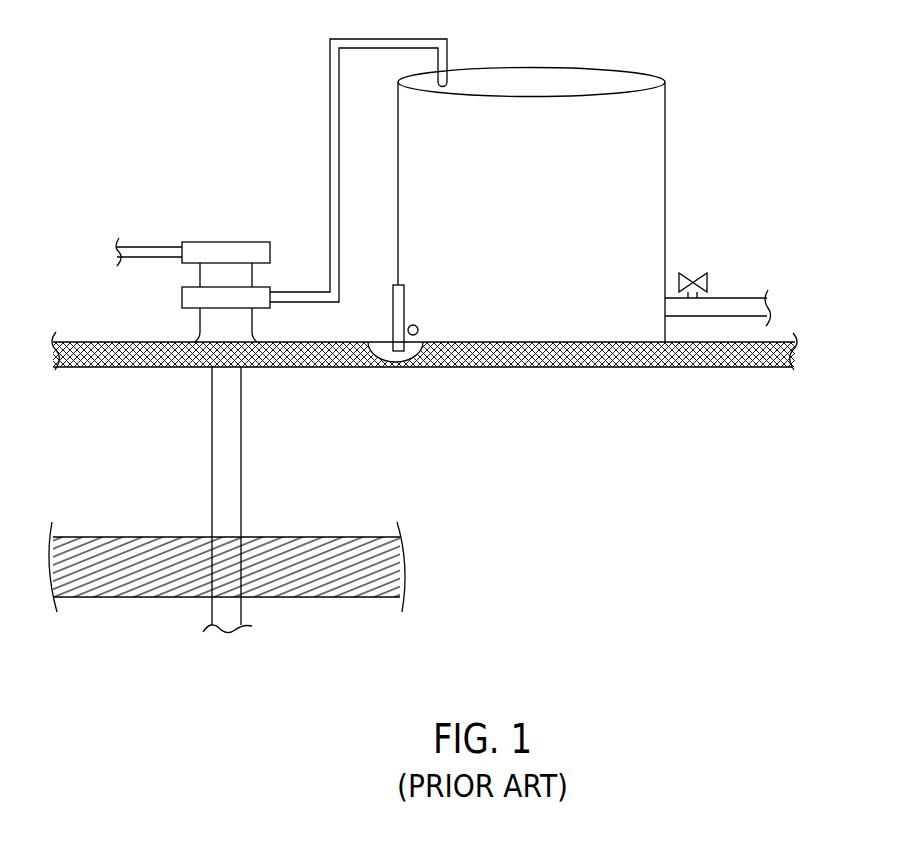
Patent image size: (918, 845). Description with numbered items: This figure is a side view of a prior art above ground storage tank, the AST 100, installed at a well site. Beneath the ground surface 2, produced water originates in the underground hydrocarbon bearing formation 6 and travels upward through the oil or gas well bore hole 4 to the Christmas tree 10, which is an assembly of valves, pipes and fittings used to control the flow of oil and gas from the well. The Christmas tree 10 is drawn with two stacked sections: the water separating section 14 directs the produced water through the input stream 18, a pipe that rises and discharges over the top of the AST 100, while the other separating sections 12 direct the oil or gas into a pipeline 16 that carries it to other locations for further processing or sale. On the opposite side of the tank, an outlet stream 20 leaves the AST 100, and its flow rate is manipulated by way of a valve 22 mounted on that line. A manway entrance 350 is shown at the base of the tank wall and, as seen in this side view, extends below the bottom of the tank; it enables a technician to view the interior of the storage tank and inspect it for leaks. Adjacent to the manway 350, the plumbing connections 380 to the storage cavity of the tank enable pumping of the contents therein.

The ground surface 2 is at (716, 368).
The oil or gas well bore hole 4 is at (226, 452).
The underground hydrocarbon bearing formation 6 is at (405, 560).
The Christmas tree 10 is at (209, 200).
The separating sections 12 is at (224, 246).
The water separating section 14 is at (181, 293).
The pipeline 16 is at (174, 242).
The input stream 18 is at (357, 39).
The outlet stream 20 is at (717, 297).
The valve 22 is at (697, 275).
The AST 100 is at (533, 66).
The manway entrance 350 is at (392, 332).
The plumbing connections 380 is at (418, 326).